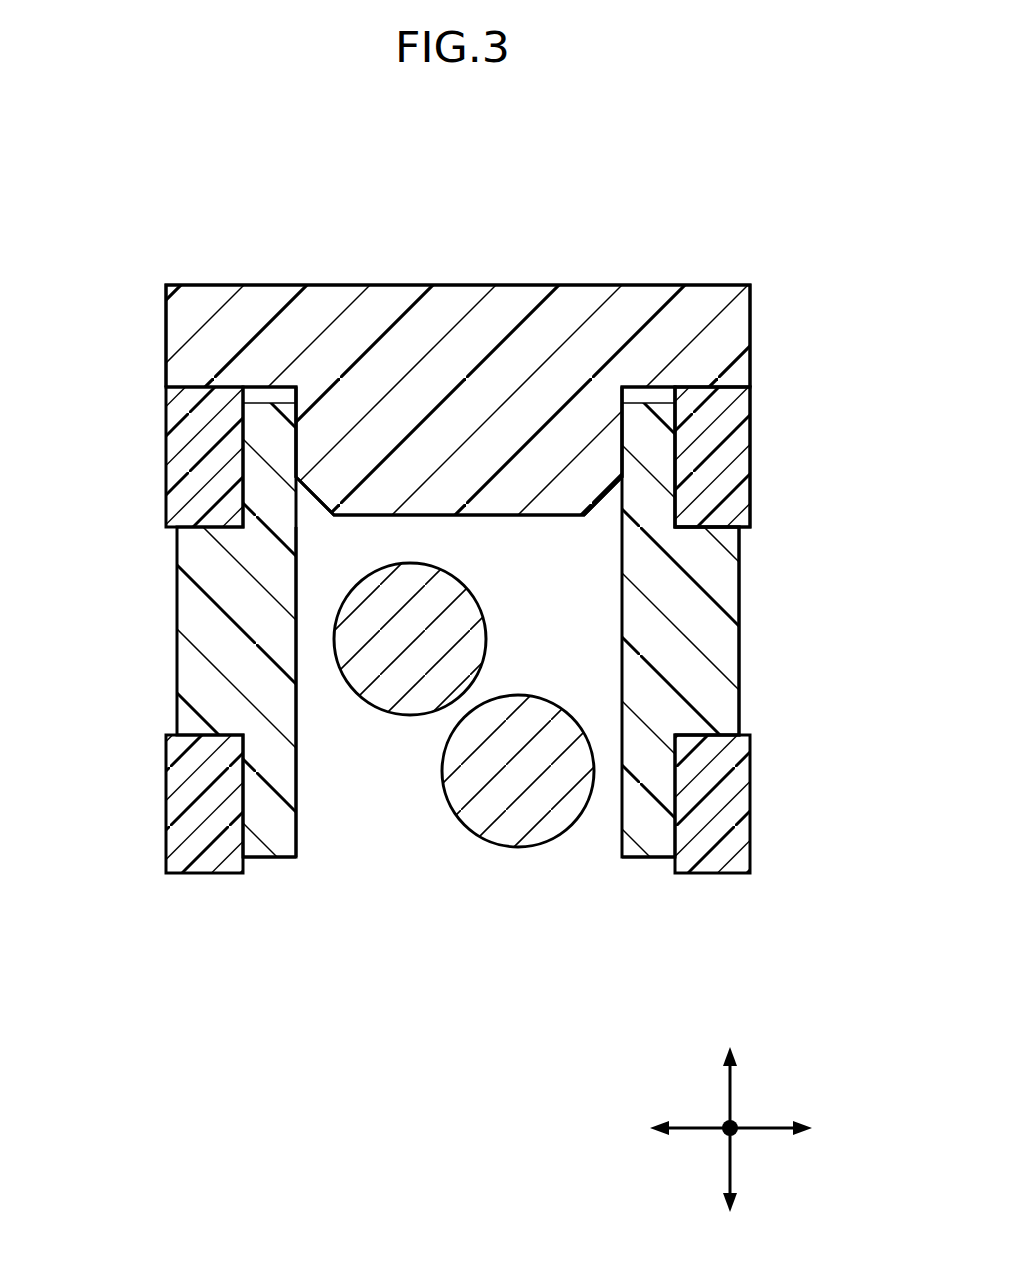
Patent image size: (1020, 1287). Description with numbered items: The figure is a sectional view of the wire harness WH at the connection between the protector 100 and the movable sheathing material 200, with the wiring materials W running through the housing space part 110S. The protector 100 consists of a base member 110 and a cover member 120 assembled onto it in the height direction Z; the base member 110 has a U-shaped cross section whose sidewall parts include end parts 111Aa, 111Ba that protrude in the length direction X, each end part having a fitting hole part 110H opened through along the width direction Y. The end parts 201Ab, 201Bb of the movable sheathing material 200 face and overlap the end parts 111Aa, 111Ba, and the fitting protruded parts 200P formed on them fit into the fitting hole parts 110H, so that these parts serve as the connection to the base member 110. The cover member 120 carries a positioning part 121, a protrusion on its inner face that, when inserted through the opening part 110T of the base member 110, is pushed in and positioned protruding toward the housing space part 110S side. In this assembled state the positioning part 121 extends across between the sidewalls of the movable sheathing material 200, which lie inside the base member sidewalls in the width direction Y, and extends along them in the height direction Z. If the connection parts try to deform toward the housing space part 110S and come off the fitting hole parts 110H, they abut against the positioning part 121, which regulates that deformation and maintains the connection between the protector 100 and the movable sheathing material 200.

The wire harness WH is at (118, 200).
The protector 100 is at (827, 196).
The cover member 120 is at (710, 255).
The positioning part 121 is at (572, 437).
The base member 110 is at (770, 396).
The opening part 110T is at (298, 437).
The fitting hole part 110H is at (193, 530).
The housing space part 110S is at (314, 703).
The movable sheathing material 200 is at (752, 605).
The fitting protruded part 200P is at (190, 655).
The end part 111Aa is at (167, 850).
The end part 111Ba is at (750, 852).
The end part 201Ab is at (275, 858).
The end part 201Bb is at (642, 858).
The wiring material W is at (381, 726).
The height direction Z is at (733, 1080).
The length direction X is at (737, 1135).
The width direction Y is at (690, 1130).